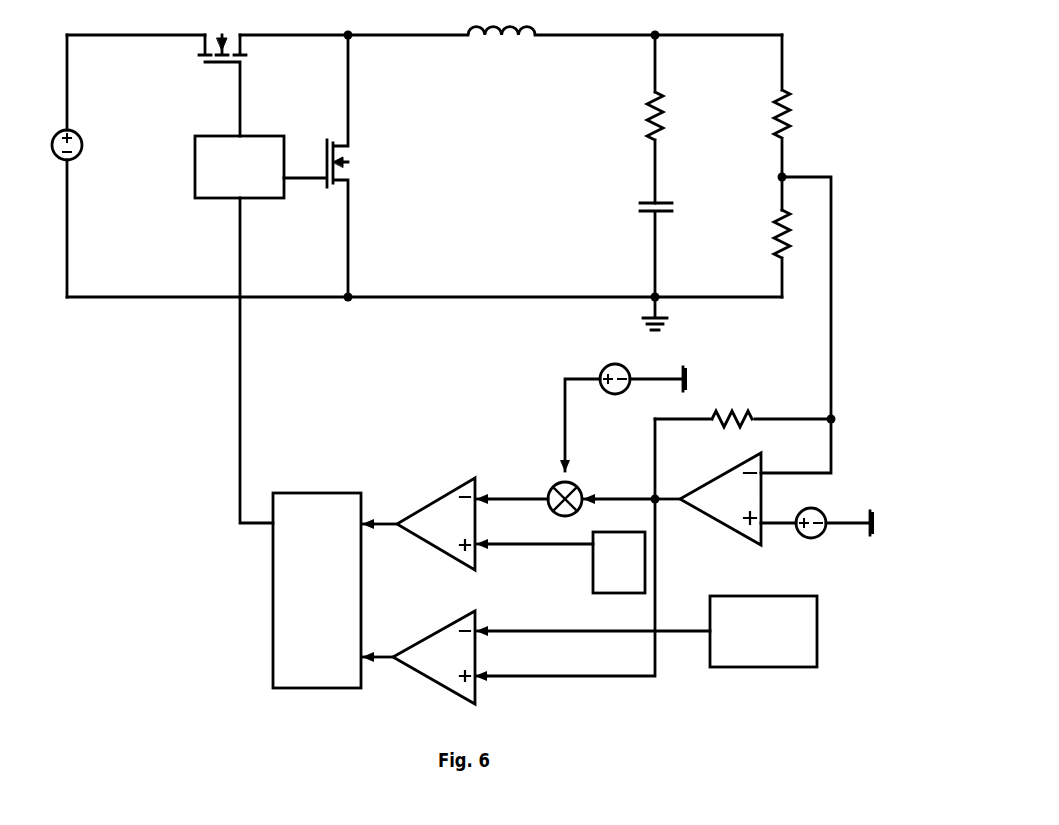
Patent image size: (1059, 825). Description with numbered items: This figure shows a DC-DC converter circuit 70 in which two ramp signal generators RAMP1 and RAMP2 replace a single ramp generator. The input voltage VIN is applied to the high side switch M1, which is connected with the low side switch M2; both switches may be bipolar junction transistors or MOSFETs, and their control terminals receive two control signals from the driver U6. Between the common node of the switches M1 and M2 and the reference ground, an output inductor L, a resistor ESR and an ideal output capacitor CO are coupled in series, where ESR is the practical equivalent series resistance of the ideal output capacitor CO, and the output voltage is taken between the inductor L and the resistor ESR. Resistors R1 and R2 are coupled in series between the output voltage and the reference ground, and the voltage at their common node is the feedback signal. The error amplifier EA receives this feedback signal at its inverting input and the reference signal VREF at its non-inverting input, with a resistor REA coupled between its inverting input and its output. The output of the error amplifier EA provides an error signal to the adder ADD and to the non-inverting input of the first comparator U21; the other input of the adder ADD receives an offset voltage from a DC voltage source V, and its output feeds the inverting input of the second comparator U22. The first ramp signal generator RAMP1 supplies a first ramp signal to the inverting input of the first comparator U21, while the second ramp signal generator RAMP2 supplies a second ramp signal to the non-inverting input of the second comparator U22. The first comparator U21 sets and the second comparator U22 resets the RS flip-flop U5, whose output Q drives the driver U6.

The DC-DC converter circuit 70 is at (160, 439).
The high side switch M1 is at (222, 85).
The low side switch M2 is at (316, 166).
The driver U6 is at (239, 167).
The output inductor L is at (501, 47).
The resistor ESR is at (680, 119).
The ideal output capacitor CO is at (675, 239).
The resistor R1 is at (798, 122).
The resistor R2 is at (798, 253).
The resistor REA is at (743, 406).
The error amplifier EA is at (720, 499).
The reference signal VREF is at (812, 536).
The DC voltage source V is at (615, 369).
The adder ADD is at (570, 500).
The second comparator U22 is at (436, 536).
The first comparator U21 is at (434, 669).
The RS flip-flop U5 is at (317, 579).
The first ramp signal generator RAMP1 is at (763, 631).
The second ramp signal generator RAMP2 is at (619, 562).
The input voltage VIN is at (80, 160).